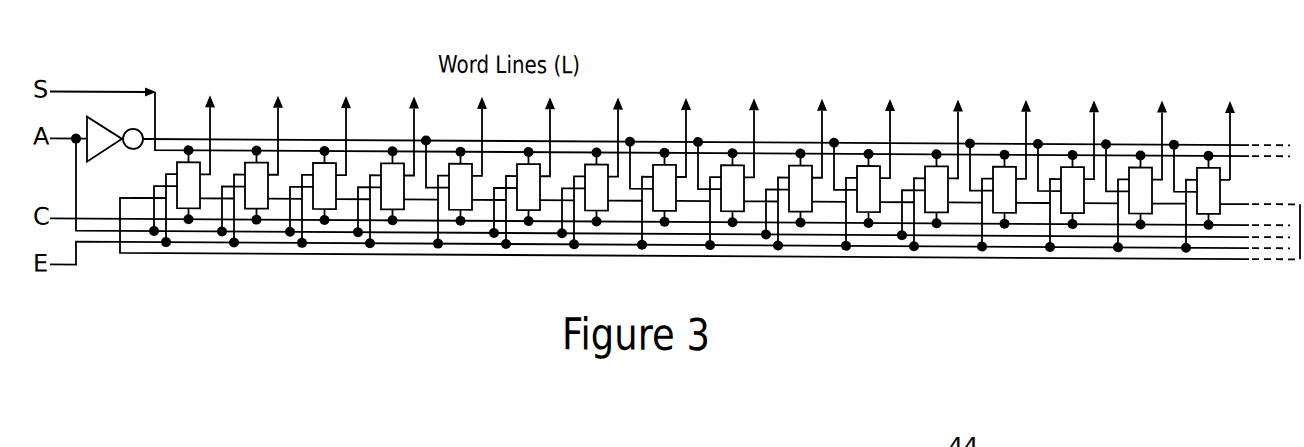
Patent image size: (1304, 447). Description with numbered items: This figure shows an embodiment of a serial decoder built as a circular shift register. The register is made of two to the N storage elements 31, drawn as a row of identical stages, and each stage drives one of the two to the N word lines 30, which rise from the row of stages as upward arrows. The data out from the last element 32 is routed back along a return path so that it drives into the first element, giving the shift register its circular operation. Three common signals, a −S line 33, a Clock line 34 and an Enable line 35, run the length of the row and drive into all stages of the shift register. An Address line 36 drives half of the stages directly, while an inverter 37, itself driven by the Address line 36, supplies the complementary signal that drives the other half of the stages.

The word line 30 is at (1230, 116).
The storage element 31 is at (1220, 186).
The data out from the last element 32 is at (133, 253).
The −S line 33 is at (132, 92).
The Clock line 34 is at (63, 220).
The Enable line 35 is at (63, 266).
The Address line 36 is at (65, 138).
The inverter 37 is at (97, 123).